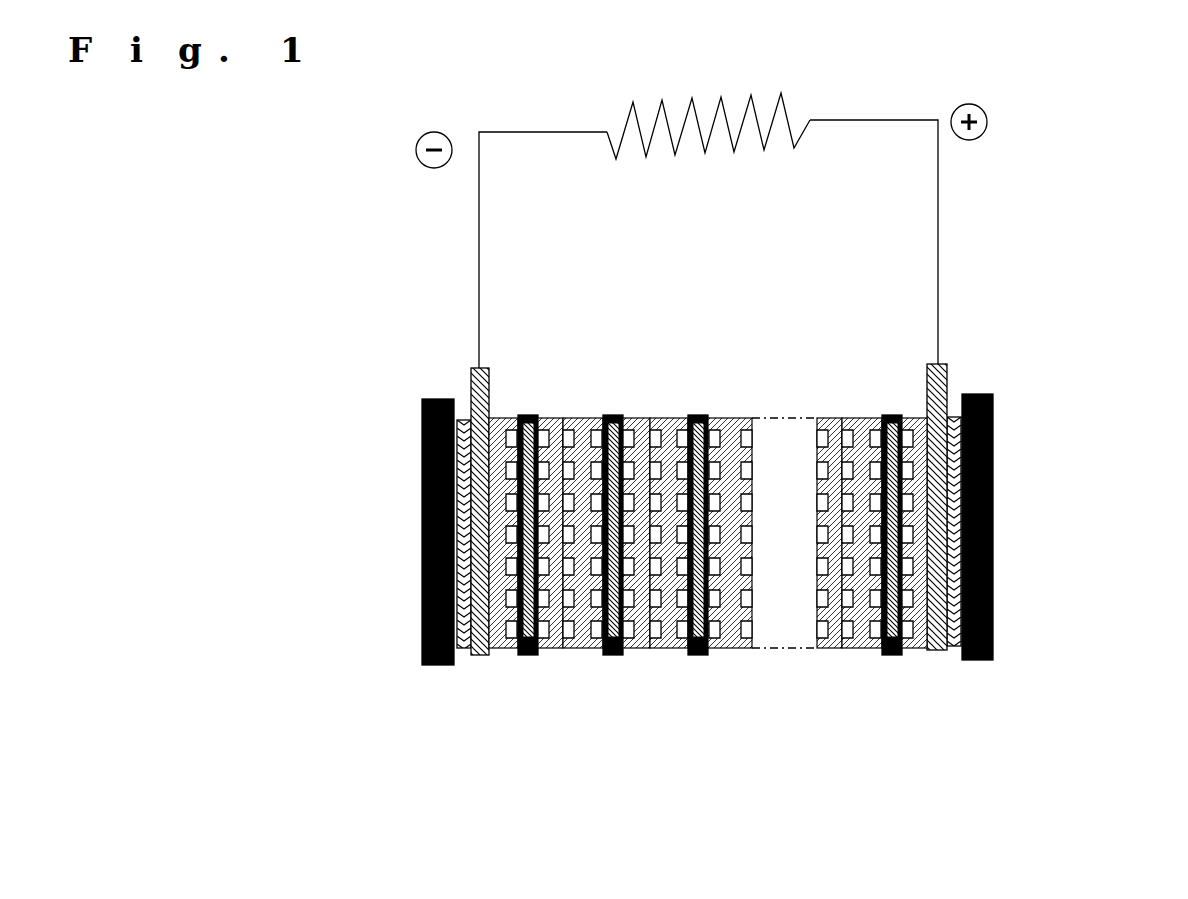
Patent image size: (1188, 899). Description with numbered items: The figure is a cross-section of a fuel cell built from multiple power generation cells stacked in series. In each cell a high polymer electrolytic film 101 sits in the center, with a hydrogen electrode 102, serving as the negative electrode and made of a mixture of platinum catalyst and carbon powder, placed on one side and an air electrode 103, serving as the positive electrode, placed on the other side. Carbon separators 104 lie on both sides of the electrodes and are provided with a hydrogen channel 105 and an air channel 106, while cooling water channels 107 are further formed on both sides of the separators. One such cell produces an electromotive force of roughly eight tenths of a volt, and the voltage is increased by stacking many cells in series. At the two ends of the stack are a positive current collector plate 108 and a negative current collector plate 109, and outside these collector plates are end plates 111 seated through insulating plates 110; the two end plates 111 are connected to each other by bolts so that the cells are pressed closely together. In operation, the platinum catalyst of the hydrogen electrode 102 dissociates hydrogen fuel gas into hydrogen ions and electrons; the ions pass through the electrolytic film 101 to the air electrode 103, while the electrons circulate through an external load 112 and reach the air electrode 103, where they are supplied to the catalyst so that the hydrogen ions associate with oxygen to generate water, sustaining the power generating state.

The high polymer electrolytic film 101 is at (702, 655).
The hydrogen electrode 102 is at (688, 525).
The air electrode 103 is at (710, 525).
The carbon separator 104 is at (732, 416).
The hydrogen channel 105 is at (683, 625).
The air channel 106 is at (728, 650).
The cooling water channel 107 is at (651, 430).
The positive current collector plate 108 is at (937, 650).
The negative current collector plate 109 is at (478, 657).
The insulating plate 110 is at (463, 418).
The end plate 111 is at (422, 522).
The external load 112 is at (691, 134).